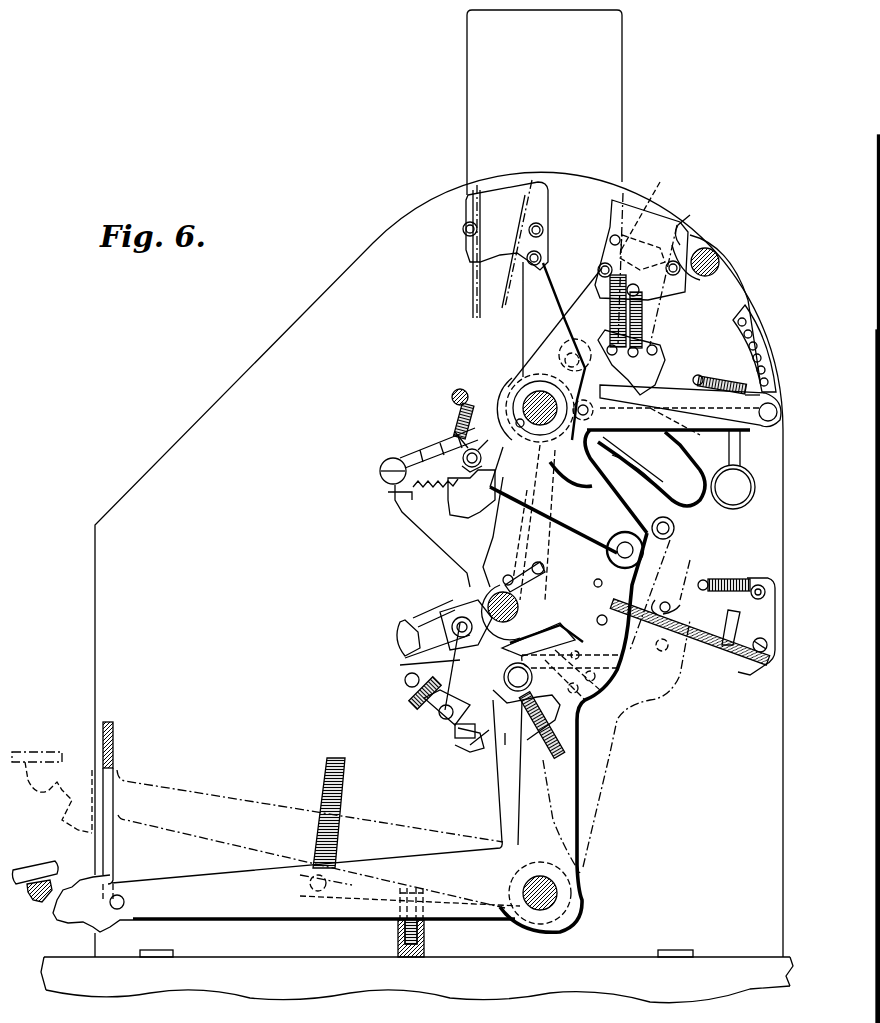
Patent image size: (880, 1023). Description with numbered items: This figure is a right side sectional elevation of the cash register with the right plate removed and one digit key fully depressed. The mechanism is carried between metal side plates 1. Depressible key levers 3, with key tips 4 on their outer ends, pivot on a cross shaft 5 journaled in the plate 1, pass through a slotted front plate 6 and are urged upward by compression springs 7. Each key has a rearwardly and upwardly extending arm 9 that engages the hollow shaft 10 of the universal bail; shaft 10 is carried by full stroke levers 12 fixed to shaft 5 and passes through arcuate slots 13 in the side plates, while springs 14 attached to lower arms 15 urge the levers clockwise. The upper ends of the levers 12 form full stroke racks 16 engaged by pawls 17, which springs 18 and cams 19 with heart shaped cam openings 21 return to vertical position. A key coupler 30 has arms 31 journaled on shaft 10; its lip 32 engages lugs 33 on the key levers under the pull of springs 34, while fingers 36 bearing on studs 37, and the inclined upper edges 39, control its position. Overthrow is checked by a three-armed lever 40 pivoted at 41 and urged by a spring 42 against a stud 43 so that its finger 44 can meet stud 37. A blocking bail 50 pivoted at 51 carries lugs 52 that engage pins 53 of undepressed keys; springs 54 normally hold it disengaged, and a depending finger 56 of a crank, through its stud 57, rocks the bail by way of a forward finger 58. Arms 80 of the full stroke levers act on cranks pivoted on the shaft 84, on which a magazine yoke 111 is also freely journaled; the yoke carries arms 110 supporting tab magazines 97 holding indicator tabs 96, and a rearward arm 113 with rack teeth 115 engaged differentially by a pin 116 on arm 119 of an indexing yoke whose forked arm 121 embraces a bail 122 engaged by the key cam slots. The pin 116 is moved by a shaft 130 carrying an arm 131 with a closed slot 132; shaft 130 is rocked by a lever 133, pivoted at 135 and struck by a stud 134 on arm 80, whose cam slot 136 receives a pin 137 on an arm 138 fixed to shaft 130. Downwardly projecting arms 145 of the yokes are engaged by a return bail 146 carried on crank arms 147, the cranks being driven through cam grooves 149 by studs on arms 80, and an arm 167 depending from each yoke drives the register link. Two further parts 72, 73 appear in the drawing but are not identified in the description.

The side or end plates 1 is at (362, 262).
The key levers 3 is at (188, 882).
The key tips 4 is at (36, 874).
The cross shaft 5 is at (558, 893).
The slotted front plate 6 is at (112, 750).
The compression springs 7 is at (398, 935).
The arm 9 is at (566, 746).
The hollow shaft 10 is at (505, 679).
The full stroke levers 12 is at (500, 783).
The arcuate slots 13 is at (528, 712).
The springs 14 is at (336, 775).
The lower arms 15 is at (442, 862).
The full stroke racks 16 is at (402, 512).
The pawls 17 is at (454, 494).
The springs 18 is at (474, 411).
The cams 19 is at (425, 448).
The heart shaped cam openings 21 is at (462, 462).
The key coupler 30 is at (522, 610).
The arms 31 is at (494, 741).
The edge or lip 32 is at (561, 634).
The lugs 33 is at (571, 670).
The springs 34 is at (560, 753).
The fingers 36 is at (400, 640).
The studs 37 is at (458, 618).
The upper edges 39 is at (405, 660).
The three-armed lever 40 is at (410, 684).
The pivot 41 is at (412, 614).
The spring 42 is at (416, 702).
The stud 43 is at (438, 718).
The finger 44 is at (440, 605).
The blocking bail 50 is at (740, 656).
The pivot 51 is at (748, 635).
The upstanding lug 52 is at (660, 595).
The pin 53 is at (653, 609).
The springs 54 is at (752, 585).
The depending finger 56 is at (680, 470).
The stud 57 is at (640, 539).
The finger 58 is at (690, 537).
The lever 72 is at (469, 742).
The block 73 is at (458, 740).
The arms 80 is at (600, 368).
The shaft 84 is at (530, 403).
The tabs 96 is at (478, 285).
The tab magazines 97 is at (488, 250).
The arms 110 is at (548, 290).
The magazine yoke 111 is at (545, 370).
The arm 113 is at (660, 385).
The rack teeth 115 is at (755, 340).
The pin 116 is at (762, 385).
The arm 119 is at (715, 375).
The forked arm 121 is at (541, 443).
The bail 122 is at (614, 552).
The shaft 130 is at (716, 256).
The arm 131 is at (722, 282).
The closed slot 132 is at (745, 316).
The pivoted lever 133 is at (640, 338).
The stud 134 is at (568, 360).
The pivot 135 is at (552, 275).
The cam slot 136 is at (668, 230).
The pin 137 is at (650, 252).
The arm 138 is at (700, 238).
The downwardly projecting arms 145 is at (505, 550).
The return bail 146 is at (518, 604).
The arm 147 is at (492, 525).
The cam grooves 149 is at (646, 452).
The arm 167 is at (542, 579).